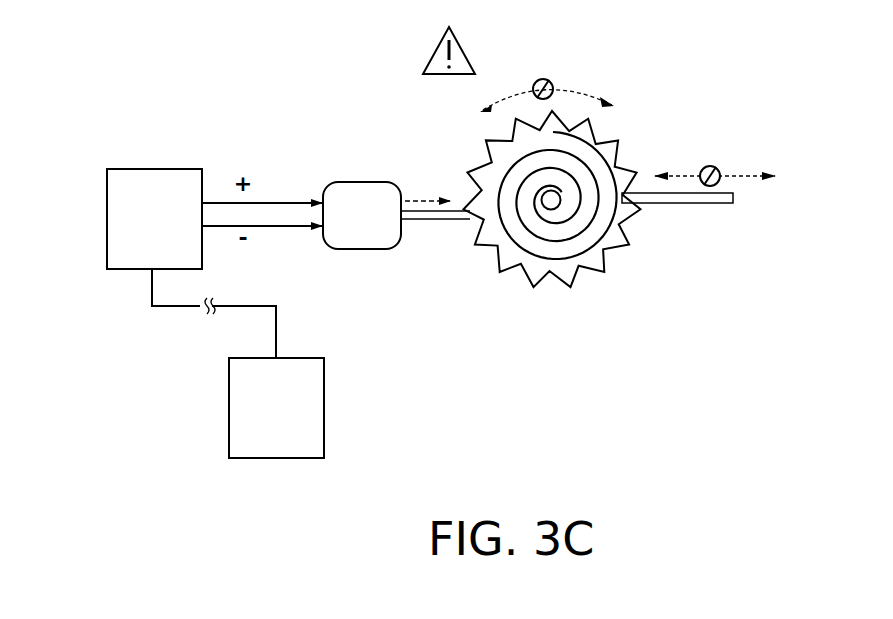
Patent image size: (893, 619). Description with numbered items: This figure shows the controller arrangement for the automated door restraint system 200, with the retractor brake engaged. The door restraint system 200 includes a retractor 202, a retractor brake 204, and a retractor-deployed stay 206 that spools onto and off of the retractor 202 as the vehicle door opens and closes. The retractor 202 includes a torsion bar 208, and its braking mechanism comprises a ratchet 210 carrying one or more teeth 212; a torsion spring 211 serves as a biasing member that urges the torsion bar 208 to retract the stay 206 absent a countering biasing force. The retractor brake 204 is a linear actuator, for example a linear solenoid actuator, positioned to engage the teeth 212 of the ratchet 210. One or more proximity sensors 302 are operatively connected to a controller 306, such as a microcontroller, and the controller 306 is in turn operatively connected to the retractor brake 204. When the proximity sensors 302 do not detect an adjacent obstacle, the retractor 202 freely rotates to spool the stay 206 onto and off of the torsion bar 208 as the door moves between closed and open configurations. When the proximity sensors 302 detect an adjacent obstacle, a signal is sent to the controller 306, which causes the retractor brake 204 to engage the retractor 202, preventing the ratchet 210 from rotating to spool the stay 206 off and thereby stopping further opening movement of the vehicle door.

The door restraint system 200 is at (475, 300).
The retractor 202 is at (626, 122).
The retractor brake 204 is at (360, 184).
The retractor-deployed stay 206 is at (708, 203).
The torsion bar 208 is at (557, 199).
The ratchet 210 is at (558, 114).
The torsion spring 211 is at (600, 250).
The teeth 212 is at (490, 268).
The proximity sensors 302 is at (250, 420).
The controller 306 is at (130, 232).